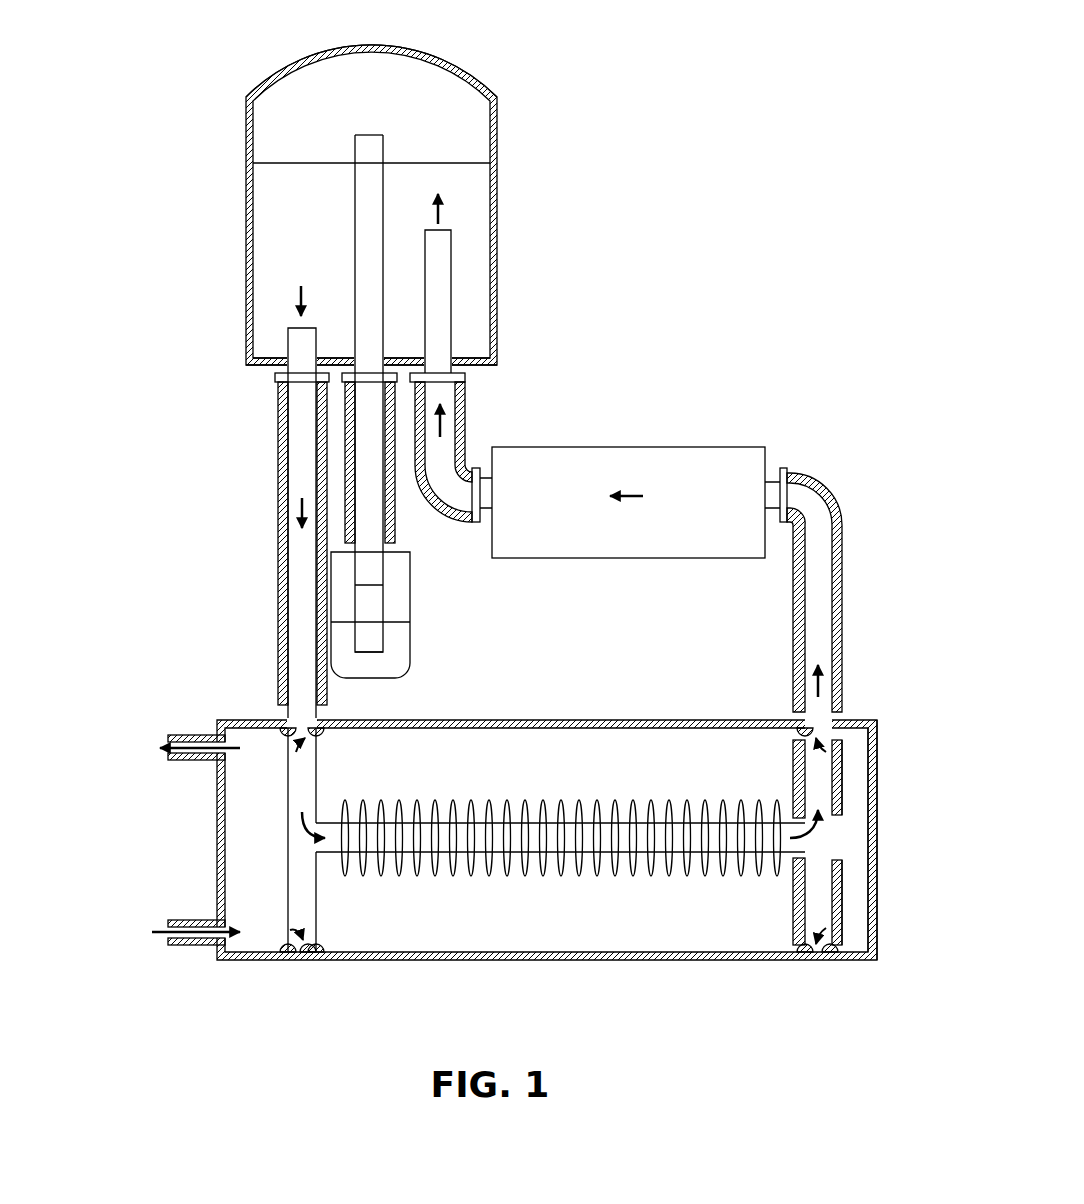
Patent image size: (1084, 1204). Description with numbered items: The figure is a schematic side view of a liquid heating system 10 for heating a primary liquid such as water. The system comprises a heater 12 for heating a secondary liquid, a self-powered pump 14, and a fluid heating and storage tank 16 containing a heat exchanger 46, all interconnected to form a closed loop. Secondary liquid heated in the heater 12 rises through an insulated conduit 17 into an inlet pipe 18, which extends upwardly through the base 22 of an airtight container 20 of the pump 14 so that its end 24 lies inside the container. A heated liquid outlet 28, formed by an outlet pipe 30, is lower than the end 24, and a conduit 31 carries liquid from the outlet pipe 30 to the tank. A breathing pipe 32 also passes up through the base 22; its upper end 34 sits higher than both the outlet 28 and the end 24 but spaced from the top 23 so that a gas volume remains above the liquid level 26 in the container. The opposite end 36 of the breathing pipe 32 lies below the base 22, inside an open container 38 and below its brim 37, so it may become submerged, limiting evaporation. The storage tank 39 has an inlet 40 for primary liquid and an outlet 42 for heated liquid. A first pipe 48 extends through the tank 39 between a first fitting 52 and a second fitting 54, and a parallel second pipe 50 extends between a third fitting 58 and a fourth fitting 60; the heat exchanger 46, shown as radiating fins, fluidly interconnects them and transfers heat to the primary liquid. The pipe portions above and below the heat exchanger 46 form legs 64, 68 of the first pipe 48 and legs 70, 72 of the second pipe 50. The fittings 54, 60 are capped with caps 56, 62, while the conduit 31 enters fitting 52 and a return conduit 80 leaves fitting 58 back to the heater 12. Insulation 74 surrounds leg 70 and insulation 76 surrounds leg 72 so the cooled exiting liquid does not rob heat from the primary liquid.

The liquid heating system 10 is at (678, 256).
The heater 12 is at (684, 447).
The self-powered pump 14 is at (350, 182).
The fluid heating and storage tank 16 is at (539, 843).
The conduit 17 is at (440, 452).
The inlet pipe 18 is at (438, 298).
The airtight container 20 is at (268, 73).
The base 22 is at (480, 362).
The top 23 is at (372, 47).
The end of inlet pipe 24 is at (442, 228).
The liquid level 26 is at (436, 163).
The heated liquid outlet 28 is at (297, 325).
The outlet pipe 30 is at (300, 340).
The conduit 31 is at (300, 562).
The breathing pipe 32 is at (363, 365).
The end of breathing pipe 34 is at (373, 135).
The opposite end of breathing pipe 36 is at (370, 652).
The brim 37 is at (402, 631).
The open container 38 is at (410, 605).
The storage tank 39 is at (877, 807).
The inlet 40 is at (197, 945).
The outlet 42 is at (197, 735).
The heat exchanger 46 is at (586, 795).
The first pipe 48 is at (288, 840).
The second pipe 50 is at (850, 845).
The first fitting 52 is at (292, 745).
The second fitting 54 is at (292, 955).
The cap 56 is at (318, 960).
The third fitting 58 is at (835, 740).
The fourth fitting 60 is at (840, 960).
The cap 62 is at (805, 960).
The leg 64 is at (320, 758).
The leg 68 is at (320, 912).
The leg 70 is at (800, 770).
The leg 72 is at (800, 925).
The insulation 74 is at (842, 752).
The insulation 76 is at (838, 918).
The return conduit 80 is at (822, 553).